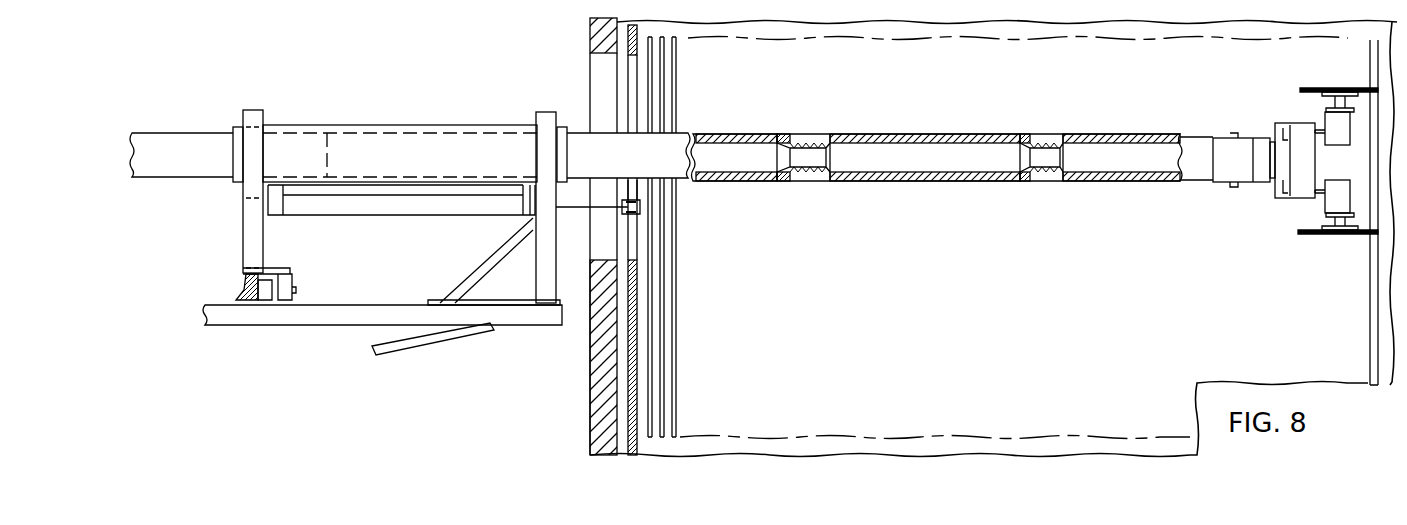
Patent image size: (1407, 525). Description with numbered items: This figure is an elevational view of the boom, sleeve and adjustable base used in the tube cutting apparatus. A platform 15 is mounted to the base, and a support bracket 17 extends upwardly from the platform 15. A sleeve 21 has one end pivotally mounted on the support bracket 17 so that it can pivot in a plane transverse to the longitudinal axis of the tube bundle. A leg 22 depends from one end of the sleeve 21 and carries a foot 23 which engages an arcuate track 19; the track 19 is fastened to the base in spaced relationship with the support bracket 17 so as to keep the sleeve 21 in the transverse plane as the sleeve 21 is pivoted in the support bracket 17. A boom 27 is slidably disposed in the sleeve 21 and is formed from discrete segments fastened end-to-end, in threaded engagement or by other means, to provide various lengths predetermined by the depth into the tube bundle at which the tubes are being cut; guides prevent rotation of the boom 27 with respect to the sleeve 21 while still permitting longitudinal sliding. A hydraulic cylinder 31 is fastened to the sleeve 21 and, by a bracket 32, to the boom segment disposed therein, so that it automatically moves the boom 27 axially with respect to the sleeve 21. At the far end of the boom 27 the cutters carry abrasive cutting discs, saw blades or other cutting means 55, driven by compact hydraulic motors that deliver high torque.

The platform 15 is at (368, 310).
The support bracket 17 is at (554, 247).
The arcuate track 19 is at (240, 289).
The sleeve 21 is at (376, 126).
The leg 22 is at (267, 191).
The foot 23 is at (290, 281).
The boom 27 is at (935, 135).
The hydraulic cylinder 31 is at (421, 205).
The bracket 32 is at (638, 190).
The cutting means 55 is at (1353, 88).